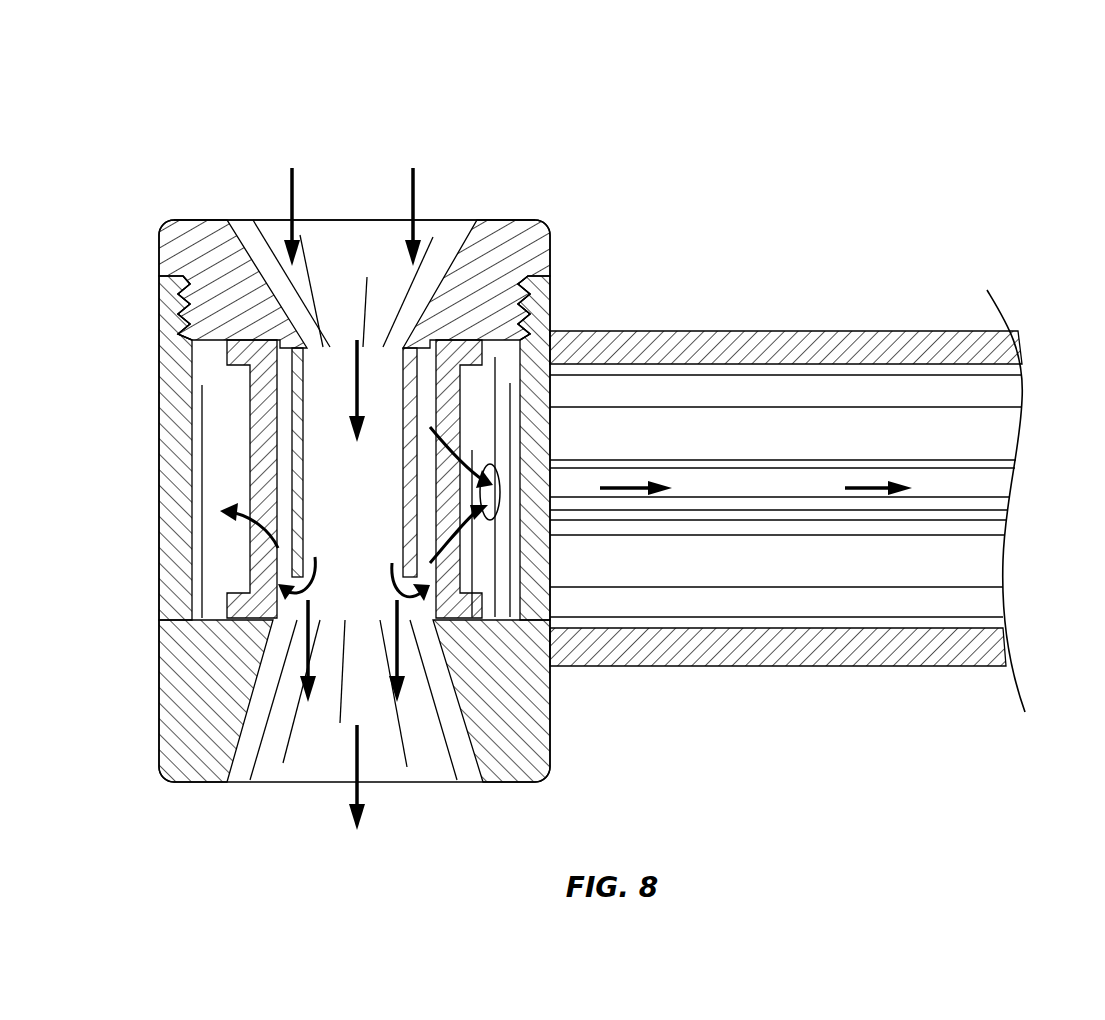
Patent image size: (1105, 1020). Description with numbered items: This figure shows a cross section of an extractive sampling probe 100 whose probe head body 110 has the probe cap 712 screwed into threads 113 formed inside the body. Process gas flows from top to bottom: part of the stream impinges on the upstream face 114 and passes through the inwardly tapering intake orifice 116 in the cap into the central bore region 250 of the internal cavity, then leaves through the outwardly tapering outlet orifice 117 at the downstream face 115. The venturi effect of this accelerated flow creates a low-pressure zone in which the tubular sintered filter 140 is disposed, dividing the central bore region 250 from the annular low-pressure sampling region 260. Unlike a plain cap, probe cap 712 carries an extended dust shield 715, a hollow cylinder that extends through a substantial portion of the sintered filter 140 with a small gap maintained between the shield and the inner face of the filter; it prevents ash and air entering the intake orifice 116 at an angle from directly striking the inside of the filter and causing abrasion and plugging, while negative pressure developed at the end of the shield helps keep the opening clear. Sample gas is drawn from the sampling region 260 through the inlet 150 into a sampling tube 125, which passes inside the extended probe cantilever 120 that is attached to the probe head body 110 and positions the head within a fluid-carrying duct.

The extractive probe 100 is at (232, 112).
The probe head body 110 is at (159, 670).
The threads 113 is at (175, 298).
The upstream face 114 is at (196, 219).
The downstream face 115 is at (205, 782).
The intake orifice 116 is at (423, 240).
The outlet orifice 117 is at (310, 740).
The probe cantilever 120 is at (845, 668).
The sampling tube 125 is at (960, 522).
The sintered filter 140 is at (260, 547).
The inlet 150 is at (490, 470).
The central bore region 250 is at (320, 440).
The low-pressure sampling region 260 is at (220, 482).
The probe cap 712 is at (158, 257).
The dust shield 715 is at (300, 455).